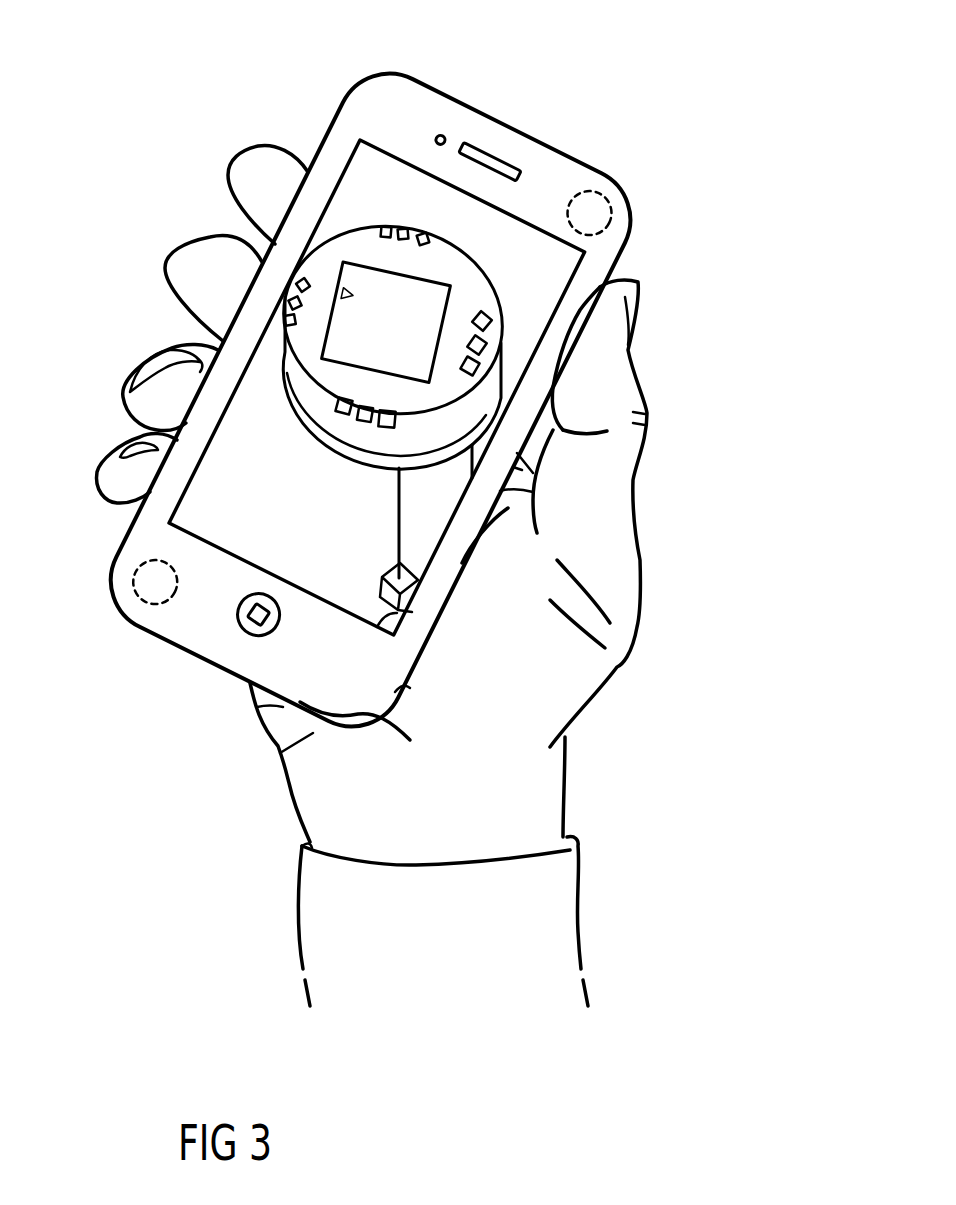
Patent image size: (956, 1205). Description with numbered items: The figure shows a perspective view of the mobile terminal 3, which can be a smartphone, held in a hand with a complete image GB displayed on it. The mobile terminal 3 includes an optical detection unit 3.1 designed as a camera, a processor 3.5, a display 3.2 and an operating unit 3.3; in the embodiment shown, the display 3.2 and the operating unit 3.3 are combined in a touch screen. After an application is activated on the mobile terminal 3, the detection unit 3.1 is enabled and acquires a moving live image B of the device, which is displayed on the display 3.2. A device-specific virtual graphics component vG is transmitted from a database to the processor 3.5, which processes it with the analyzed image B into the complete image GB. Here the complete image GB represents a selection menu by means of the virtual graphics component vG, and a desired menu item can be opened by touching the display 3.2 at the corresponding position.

The mobile terminal 3 is at (372, 374).
The optical detection unit 3.1 is at (600, 217).
The display 3.2 is at (306, 341).
The operating unit 3.3 is at (180, 517).
The processor 3.5 is at (145, 590).
The moving image B is at (306, 390).
The virtual graphics component vG is at (340, 327).
The complete image GB is at (306, 341).